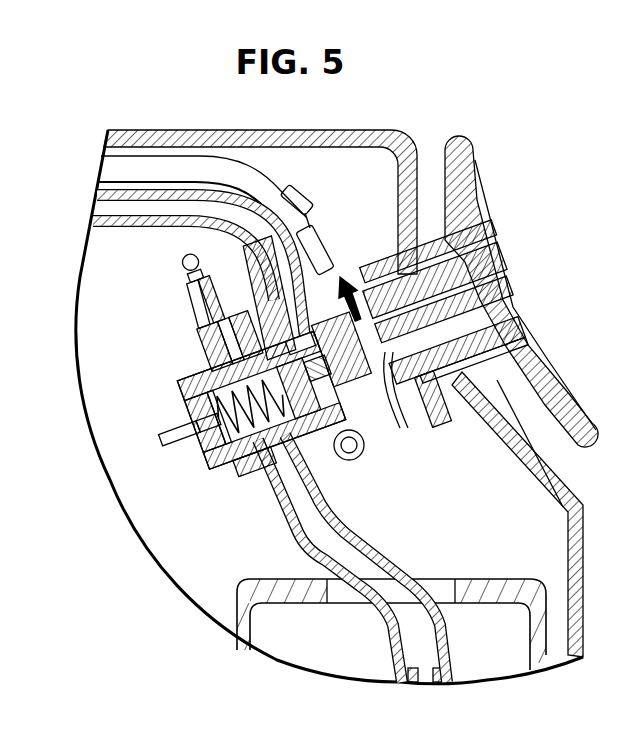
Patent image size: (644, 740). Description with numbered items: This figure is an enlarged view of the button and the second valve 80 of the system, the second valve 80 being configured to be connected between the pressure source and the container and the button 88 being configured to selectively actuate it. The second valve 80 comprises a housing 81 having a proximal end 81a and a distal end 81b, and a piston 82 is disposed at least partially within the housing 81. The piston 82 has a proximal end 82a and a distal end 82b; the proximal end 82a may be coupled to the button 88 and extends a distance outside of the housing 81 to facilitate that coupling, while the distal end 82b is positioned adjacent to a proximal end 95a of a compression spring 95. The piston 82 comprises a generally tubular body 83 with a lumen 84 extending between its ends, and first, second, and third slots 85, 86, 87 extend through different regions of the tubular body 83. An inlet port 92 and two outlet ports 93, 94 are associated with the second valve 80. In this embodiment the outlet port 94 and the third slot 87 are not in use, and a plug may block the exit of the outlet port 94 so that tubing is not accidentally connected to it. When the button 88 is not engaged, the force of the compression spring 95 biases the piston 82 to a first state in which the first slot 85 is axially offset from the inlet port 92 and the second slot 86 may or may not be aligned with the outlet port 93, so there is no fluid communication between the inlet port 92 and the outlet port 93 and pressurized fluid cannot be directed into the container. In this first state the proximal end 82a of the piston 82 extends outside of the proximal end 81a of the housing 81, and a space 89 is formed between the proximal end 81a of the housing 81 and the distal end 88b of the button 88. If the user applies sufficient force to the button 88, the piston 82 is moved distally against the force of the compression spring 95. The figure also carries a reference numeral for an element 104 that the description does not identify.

The second valve 80 is at (177, 397).
The housing 81 is at (183, 383).
The proximal end of housing 81a is at (500, 338).
The distal end of housing 81b is at (175, 395).
The piston 82 is at (315, 452).
The proximal end of piston 82a is at (462, 262).
The distal end of piston 82b is at (252, 468).
The tubular body 83 is at (350, 423).
The lumen 84 is at (480, 293).
The first slot 85 is at (290, 478).
The second slot 86 is at (318, 335).
The third slot 87 is at (193, 407).
The button 88 is at (578, 350).
The distal end of button 88b is at (382, 385).
The space 89 is at (412, 412).
The inlet port 92 is at (245, 475).
The outlet port 93 is at (250, 300).
The outlet port 94 is at (200, 337).
The compression spring 95 is at (195, 452).
The proximal end of compression spring 95a is at (178, 430).
The sensor 104 is at (328, 238).